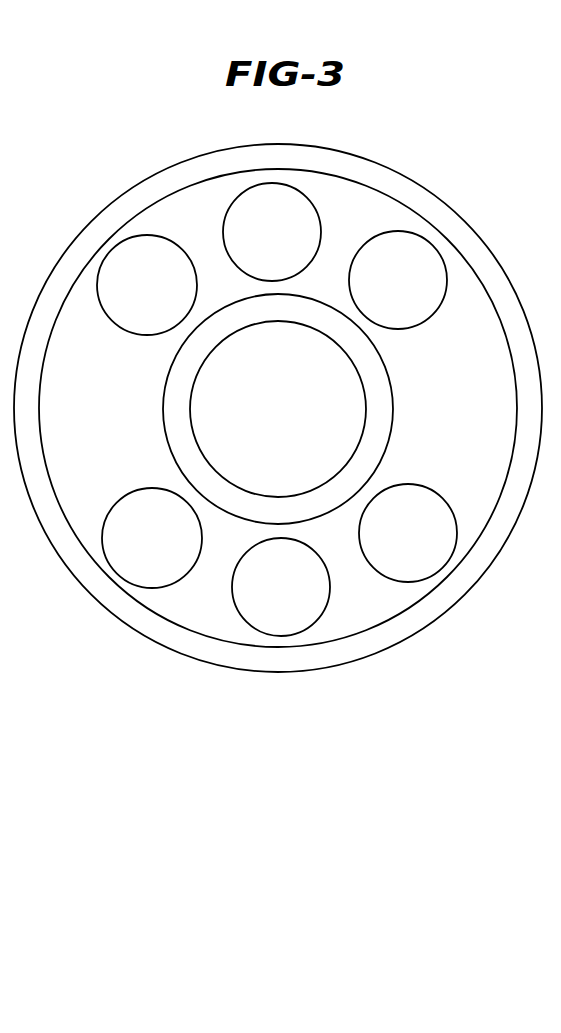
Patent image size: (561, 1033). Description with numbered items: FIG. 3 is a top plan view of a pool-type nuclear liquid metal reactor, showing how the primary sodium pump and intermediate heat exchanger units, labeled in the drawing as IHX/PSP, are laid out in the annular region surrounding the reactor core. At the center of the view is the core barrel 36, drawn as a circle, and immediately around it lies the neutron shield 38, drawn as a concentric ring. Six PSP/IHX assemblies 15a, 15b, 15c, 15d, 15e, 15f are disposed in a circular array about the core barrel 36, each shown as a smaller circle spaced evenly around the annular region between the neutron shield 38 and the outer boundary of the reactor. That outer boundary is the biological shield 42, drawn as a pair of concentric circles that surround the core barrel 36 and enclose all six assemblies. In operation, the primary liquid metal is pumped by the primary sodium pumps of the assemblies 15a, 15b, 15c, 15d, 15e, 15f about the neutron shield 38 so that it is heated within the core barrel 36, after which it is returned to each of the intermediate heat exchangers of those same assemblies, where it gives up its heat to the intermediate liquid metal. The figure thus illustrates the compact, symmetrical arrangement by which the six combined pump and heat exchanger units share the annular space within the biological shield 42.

The PSP/IHX assembly 15a is at (146, 234).
The PSP/IHX assembly 15b is at (314, 208).
The PSP/IHX assembly 15c is at (428, 318).
The PSP/IHX assembly 15d is at (433, 486).
The PSP/IHX assembly 15e is at (330, 601).
The PSP/IHX assembly 15f is at (163, 588).
The core barrel 36 is at (278, 409).
The neutron shield 38 is at (375, 393).
The biological shield 42 is at (160, 633).